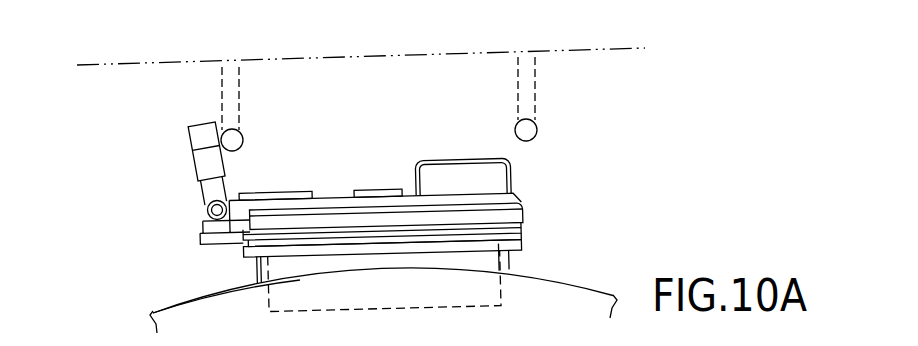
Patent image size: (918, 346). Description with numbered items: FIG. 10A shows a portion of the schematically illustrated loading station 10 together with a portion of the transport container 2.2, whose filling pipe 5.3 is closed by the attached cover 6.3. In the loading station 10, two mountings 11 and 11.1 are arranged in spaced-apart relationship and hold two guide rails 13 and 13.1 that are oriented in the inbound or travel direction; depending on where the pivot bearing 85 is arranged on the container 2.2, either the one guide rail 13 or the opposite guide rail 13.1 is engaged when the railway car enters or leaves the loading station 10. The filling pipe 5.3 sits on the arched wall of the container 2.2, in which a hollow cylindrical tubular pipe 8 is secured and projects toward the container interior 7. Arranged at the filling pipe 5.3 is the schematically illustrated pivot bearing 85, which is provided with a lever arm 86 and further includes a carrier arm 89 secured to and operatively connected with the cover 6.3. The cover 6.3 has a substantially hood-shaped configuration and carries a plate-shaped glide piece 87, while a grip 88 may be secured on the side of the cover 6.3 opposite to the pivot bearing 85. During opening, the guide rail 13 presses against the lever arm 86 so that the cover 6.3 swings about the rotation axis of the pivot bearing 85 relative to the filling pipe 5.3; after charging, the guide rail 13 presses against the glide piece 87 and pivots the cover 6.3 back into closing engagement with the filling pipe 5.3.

The loading station 10 is at (204, 56).
The mounting 11 is at (233, 93).
The guide rail 13 is at (243, 139).
The mounting 11.1 is at (527, 83).
The guide rail 13.1 is at (537, 129).
The lever arm 86 is at (193, 158).
The pivot bearing 85 is at (191, 208).
The glide piece 87 is at (271, 192).
The carrier arm 89 is at (328, 193).
The grip 88 is at (442, 165).
The cover 6.3 is at (534, 195).
The filling pipe 5.3 is at (536, 234).
The tubular pipe 8 is at (246, 272).
The container interior 7 is at (547, 292).
The container 2.2 is at (141, 320).